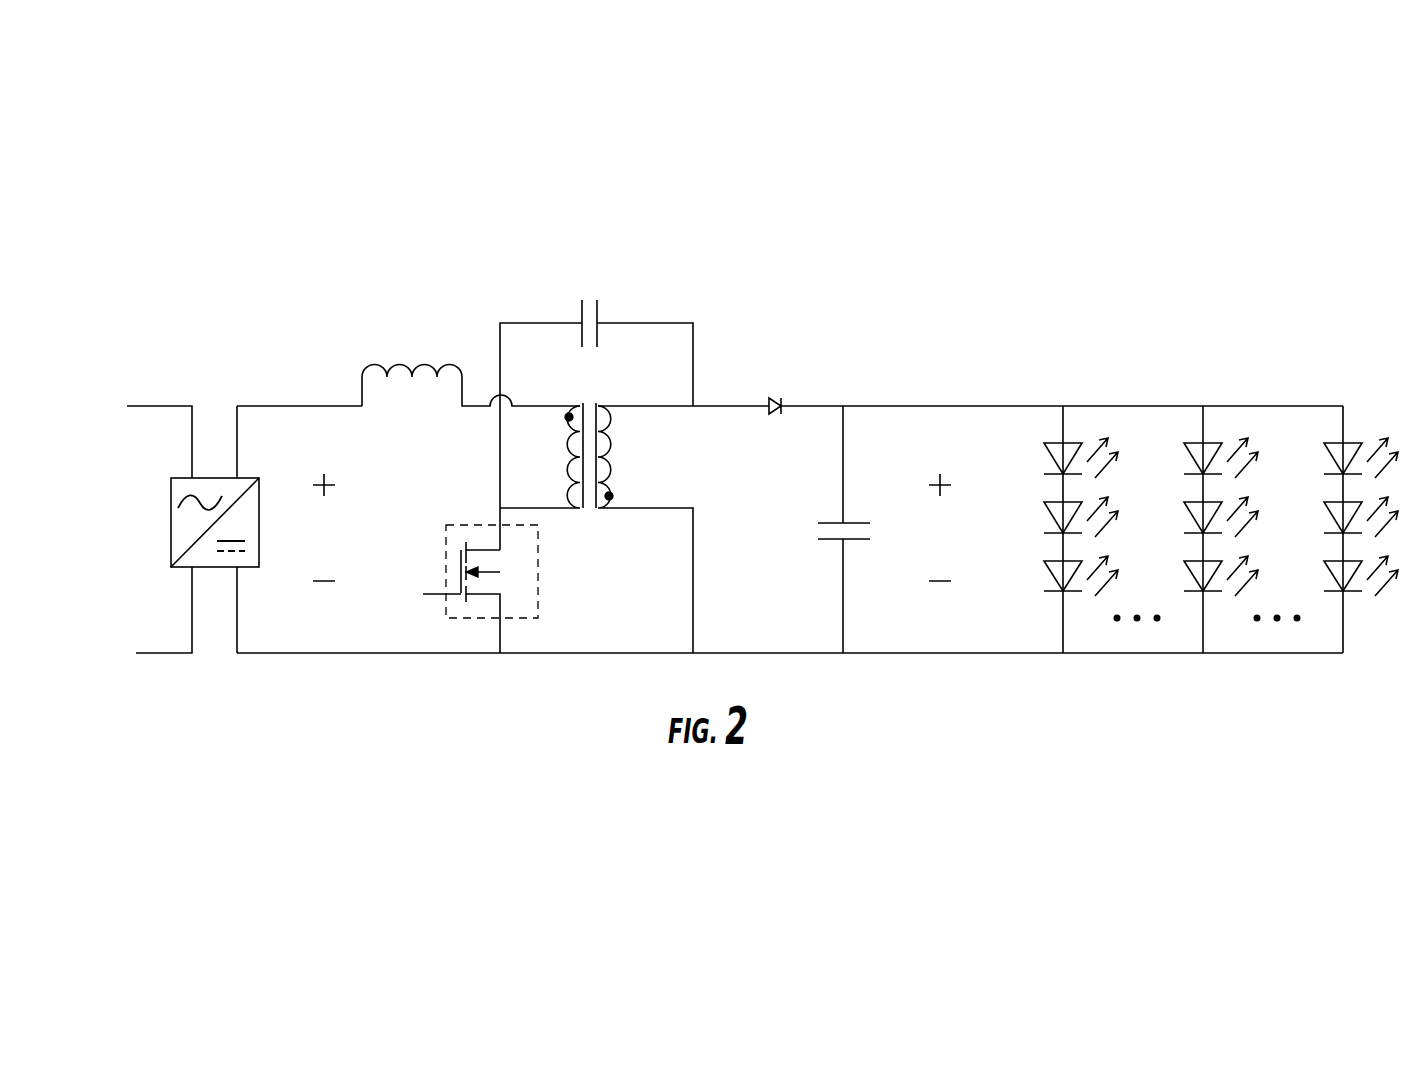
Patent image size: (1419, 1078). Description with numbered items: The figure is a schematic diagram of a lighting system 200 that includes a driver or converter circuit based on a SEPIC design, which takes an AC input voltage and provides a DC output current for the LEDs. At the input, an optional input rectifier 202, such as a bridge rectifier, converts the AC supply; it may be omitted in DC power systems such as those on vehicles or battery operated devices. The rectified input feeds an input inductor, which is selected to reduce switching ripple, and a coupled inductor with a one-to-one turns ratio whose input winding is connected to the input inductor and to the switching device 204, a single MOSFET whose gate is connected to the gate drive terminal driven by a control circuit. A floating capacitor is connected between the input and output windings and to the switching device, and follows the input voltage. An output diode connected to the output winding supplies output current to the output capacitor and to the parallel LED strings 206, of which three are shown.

The lighting system 200 is at (905, 260).
The input rectifier 202 is at (182, 567).
The switching device 204 is at (538, 590).
The parallel LED strings 206 is at (1343, 618).